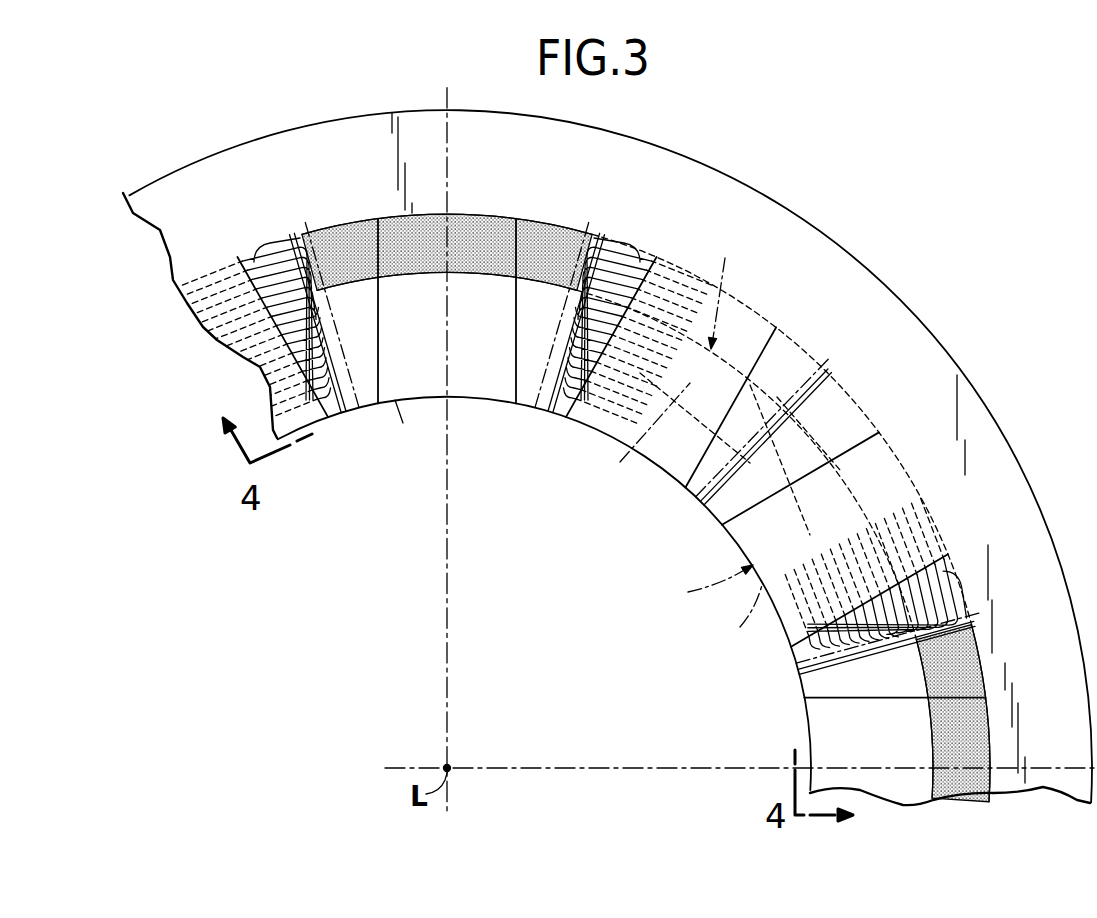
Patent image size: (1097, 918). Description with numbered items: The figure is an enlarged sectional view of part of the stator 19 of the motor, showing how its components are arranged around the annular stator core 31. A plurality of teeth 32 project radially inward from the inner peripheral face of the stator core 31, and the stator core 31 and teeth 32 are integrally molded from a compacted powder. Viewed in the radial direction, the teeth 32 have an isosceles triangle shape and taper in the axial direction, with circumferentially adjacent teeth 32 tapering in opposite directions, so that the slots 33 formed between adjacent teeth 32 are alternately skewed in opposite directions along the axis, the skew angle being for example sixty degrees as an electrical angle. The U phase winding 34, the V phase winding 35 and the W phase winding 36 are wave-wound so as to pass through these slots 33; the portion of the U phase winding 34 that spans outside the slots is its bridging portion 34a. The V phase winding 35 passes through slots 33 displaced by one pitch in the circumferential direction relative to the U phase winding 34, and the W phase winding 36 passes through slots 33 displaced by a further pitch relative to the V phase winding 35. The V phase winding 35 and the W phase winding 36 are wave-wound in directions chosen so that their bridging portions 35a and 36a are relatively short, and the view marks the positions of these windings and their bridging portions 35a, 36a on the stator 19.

The stator 19 is at (924, 268).
The stator core 31 is at (700, 170).
The teeth 32 is at (353, 410).
The slots 33 is at (306, 375).
The U phase winding 34 is at (392, 208).
The bridging portion of U phase winding 34a is at (470, 225).
The V phase winding 35 is at (726, 287).
The bridging portion of V phase winding 35a is at (635, 437).
The W phase winding 36 is at (702, 588).
The bridging portion of W phase winding 36a is at (570, 531).